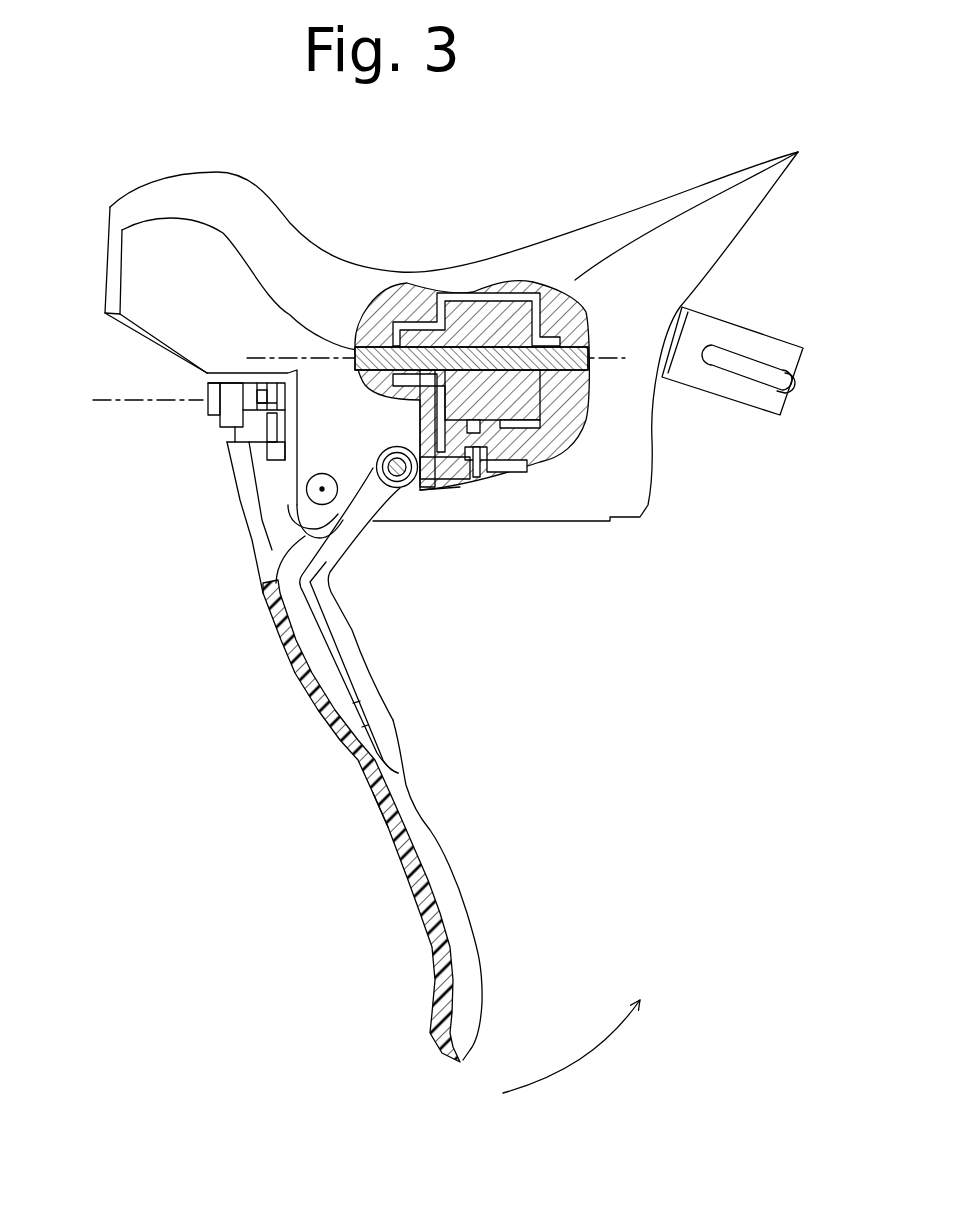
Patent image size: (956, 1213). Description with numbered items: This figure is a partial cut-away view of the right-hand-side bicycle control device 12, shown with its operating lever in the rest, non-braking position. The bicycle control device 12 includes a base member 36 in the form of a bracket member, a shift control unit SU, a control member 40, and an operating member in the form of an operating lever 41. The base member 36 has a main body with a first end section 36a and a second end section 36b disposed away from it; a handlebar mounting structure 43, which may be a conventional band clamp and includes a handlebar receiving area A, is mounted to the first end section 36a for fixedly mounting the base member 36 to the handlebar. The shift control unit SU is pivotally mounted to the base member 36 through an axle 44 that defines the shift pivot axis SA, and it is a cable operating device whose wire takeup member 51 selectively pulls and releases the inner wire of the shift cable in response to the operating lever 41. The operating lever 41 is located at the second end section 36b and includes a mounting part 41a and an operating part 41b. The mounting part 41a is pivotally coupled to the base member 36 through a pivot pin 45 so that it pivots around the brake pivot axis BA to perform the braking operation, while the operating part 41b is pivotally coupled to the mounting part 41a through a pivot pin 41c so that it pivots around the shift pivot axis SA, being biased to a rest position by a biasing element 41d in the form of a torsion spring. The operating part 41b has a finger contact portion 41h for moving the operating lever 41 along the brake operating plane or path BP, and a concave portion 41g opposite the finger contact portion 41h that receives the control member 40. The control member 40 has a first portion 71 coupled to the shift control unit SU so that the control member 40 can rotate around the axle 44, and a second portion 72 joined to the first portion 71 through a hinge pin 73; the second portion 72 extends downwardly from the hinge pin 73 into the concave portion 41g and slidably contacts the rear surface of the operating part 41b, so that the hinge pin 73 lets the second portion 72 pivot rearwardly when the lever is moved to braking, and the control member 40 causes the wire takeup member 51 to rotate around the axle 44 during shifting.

The bicycle control device 12 is at (130, 170).
The base member 36 is at (446, 265).
The first end section 36a is at (670, 250).
The second end section 36b is at (188, 333).
The control member 40 is at (330, 632).
The operating lever 41 is at (350, 767).
The mounting part 41a is at (229, 397).
The operating part 41b is at (245, 495).
The pivot pin 41c is at (208, 415).
The biasing element 41d is at (290, 432).
The concave portion 41g is at (405, 800).
The finger contact portion 41h is at (372, 797).
The handlebar mounting structure 43 is at (740, 322).
The axle 44 is at (587, 332).
The pivot pin 45 is at (290, 477).
The wire takeup member 51 is at (543, 395).
The first portion 71 is at (417, 437).
The second portion 72 is at (362, 707).
The hinge pin 73 is at (398, 473).
The handlebar receiving area A is at (720, 403).
The brake pivot axis BA is at (307, 493).
The brake operating plane or path BP is at (590, 1053).
The shift pivot axis SA is at (135, 398).
The shift control unit SU is at (510, 478).